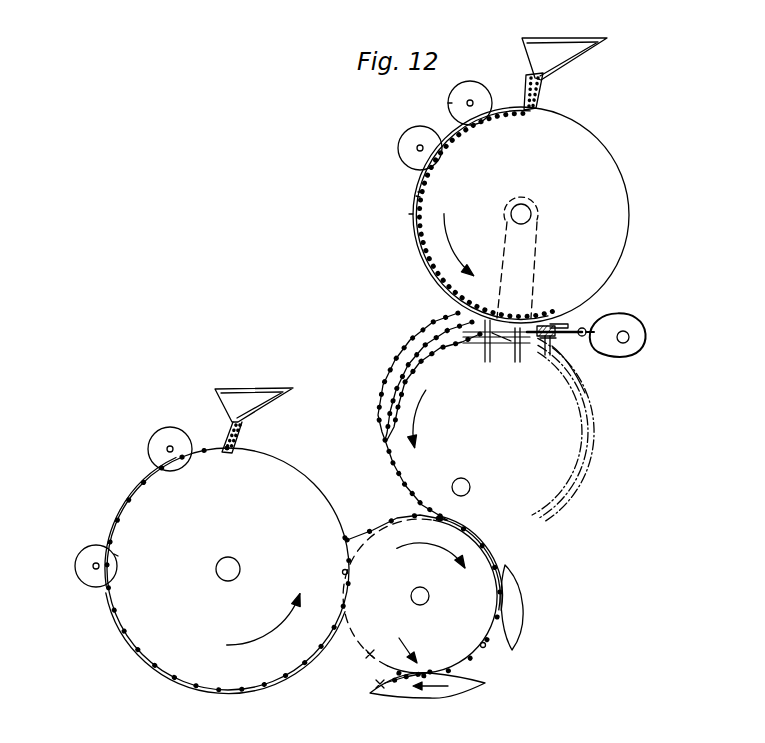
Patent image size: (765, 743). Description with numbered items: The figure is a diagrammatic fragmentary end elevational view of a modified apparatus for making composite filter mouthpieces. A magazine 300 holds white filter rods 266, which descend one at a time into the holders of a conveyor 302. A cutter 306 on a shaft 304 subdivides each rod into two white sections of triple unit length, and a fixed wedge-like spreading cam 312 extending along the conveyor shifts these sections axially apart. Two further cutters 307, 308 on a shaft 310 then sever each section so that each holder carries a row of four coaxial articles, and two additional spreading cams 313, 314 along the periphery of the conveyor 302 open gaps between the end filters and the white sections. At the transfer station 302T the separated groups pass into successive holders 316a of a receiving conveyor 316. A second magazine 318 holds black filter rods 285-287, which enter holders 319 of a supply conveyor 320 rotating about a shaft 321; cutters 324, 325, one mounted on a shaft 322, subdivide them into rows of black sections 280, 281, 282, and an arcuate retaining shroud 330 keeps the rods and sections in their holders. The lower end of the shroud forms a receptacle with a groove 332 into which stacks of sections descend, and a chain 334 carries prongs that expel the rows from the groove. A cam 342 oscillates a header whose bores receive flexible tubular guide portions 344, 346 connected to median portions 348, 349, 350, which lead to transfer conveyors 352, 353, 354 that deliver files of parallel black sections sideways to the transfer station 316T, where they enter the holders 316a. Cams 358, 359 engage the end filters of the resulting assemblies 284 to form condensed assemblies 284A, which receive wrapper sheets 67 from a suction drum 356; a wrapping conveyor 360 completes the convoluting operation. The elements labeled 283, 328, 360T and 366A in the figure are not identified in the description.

The white filter rods 266 is at (240, 386).
The black section 280 is at (428, 179).
The black section 281 is at (421, 192).
The black section 282 is at (420, 197).
The shaft 283 is at (428, 492).
The assemblies 284 is at (442, 522).
The condensed assemblies 284A is at (485, 650).
The black filter rods 285-287 is at (545, 82).
The magazine 300 is at (284, 397).
The conveyor 302 is at (257, 465).
The transfer station 302T is at (338, 577).
The shaft 304 is at (167, 449).
The cutter 306 is at (163, 430).
The cutter 307 is at (92, 548).
The cutter 308 is at (104, 540).
The shaft 310 is at (95, 570).
The spreading cam 312 is at (140, 480).
The spreading cam 313 is at (166, 677).
The spreading cam 314 is at (185, 686).
The receiving conveyor 316 is at (370, 647).
The transfer station 316T is at (453, 512).
The holders 316a is at (395, 548).
The magazine 318 is at (585, 58).
The holders 319 is at (512, 112).
The supply conveyor 320 is at (587, 105).
The shaft 321 is at (531, 211).
The shaft 322 is at (472, 100).
The cutter 324 is at (450, 100).
The cutter 325 is at (399, 148).
The roller axle 328 is at (417, 151).
The retaining shroud 330 is at (409, 214).
The groove 332 is at (552, 358).
The chain 334 is at (515, 362).
The cam 342 is at (614, 318).
The flexible tubular portion 344 is at (543, 325).
The flexible tubular portion 346 is at (483, 346).
The median portion 348 is at (562, 348).
The median portion 349 is at (546, 358).
The median portion 350 is at (515, 358).
The transfer conveyor 352 is at (593, 450).
The transfer conveyor 353 is at (573, 481).
The transfer conveyor 354 is at (535, 506).
The suction drum 356 is at (518, 594).
The cam 358 is at (500, 558).
The cam 359 is at (485, 536).
The wrapping conveyor 360 is at (467, 688).
The transfer point 360T is at (402, 639).
The rotation direction 366A is at (330, 602).
The wrapper sheets 67 is at (485, 648).